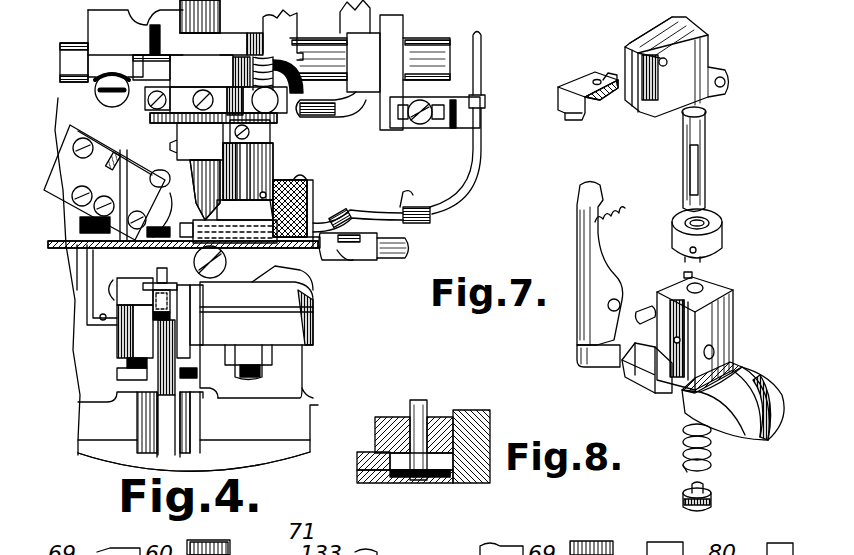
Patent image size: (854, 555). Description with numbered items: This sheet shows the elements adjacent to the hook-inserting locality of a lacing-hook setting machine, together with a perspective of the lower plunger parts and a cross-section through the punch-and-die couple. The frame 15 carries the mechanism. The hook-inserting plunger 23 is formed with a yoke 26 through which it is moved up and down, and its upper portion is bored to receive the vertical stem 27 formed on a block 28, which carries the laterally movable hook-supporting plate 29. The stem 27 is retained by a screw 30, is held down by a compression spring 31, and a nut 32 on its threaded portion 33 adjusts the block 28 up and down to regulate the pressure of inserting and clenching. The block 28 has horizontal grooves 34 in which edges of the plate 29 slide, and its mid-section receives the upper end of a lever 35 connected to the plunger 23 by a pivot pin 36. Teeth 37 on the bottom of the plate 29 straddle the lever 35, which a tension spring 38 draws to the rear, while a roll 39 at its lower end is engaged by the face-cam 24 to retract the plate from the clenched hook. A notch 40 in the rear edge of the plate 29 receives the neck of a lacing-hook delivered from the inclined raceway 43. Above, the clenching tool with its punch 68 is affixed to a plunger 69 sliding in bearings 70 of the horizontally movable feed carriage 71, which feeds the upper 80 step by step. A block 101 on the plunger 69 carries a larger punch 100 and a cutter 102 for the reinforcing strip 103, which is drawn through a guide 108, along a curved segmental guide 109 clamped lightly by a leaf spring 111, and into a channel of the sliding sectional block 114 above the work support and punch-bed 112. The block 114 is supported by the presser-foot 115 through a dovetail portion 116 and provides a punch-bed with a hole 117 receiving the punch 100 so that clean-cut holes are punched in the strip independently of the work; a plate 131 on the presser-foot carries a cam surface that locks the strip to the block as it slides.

In FIG. 4, the frame 15 is at (304, 397).
In FIG. 4, the hook-inserting plunger 23 is at (193, 438).
In FIG. 7, the hook-inserting plunger 23 is at (733, 323).
In FIG. 4, the face-cam 24 is at (130, 463).
In FIG. 7, the yoke 26 is at (763, 436).
In FIG. 7, the stem 27 is at (707, 146).
In FIG. 4, the block 28 is at (143, 308).
In FIG. 7, the block 28 is at (677, 67).
In FIG. 4, the hook-supporting plate 29 is at (170, 288).
In FIG. 7, the hook-supporting plate 29 is at (582, 88).
In FIG. 7, the screw 30 is at (713, 498).
In FIG. 7, the compression spring 31 is at (712, 458).
In FIG. 7, the nut 32 is at (724, 230).
In FIG. 7, the threaded portion 33 is at (707, 111).
In FIG. 7, the horizontal grooves 34 is at (635, 53).
In FIG. 4, the lever 35 is at (165, 415).
In FIG. 7, the lever 35 is at (598, 262).
In FIG. 7, the pivot pin 36 is at (643, 310).
In FIG. 7, the teeth 37 is at (588, 113).
In FIG. 7, the tension spring 38 is at (616, 211).
In FIG. 7, the roll 39 is at (577, 354).
In FIG. 7, the notch 40 is at (615, 66).
In FIG. 4, the inclined raceway 43 is at (64, 160).
In FIG. 4, the punch 68 is at (150, 170).
In FIG. 4, the plunger 69 is at (183, 18).
In FIG. 4, the bearings 70 is at (199, 85).
In FIG. 4, the feed carriage 71 is at (270, 25).
In FIG. 4, the upper 80 is at (420, 52).
In FIG. 4, the punch 100 is at (232, 162).
In FIG. 8, the punch 100 is at (410, 410).
In FIG. 4, the block 101 is at (213, 136).
In FIG. 4, the cutter 102 is at (256, 182).
In FIG. 4, the strip 103 is at (481, 72).
In FIG. 8, the strip 103 is at (405, 478).
In FIG. 4, the guide 108 is at (485, 106).
In FIG. 4, the curved segmental guide 109 is at (466, 175).
In FIG. 4, the leaf spring 111 is at (412, 207).
In FIG. 4, the work support and punch-bed 112 is at (183, 319).
In FIG. 4, the sectional block 114 is at (228, 220).
In FIG. 8, the sectional block 114 is at (392, 442).
In FIG. 4, the presser-foot 115 is at (290, 258).
In FIG. 8, the presser-foot 115 is at (357, 466).
In FIG. 8, the dovetail portion 116 is at (470, 432).
In FIG. 8, the hole 117 is at (440, 478).
In FIG. 4, the plate 131 is at (313, 185).